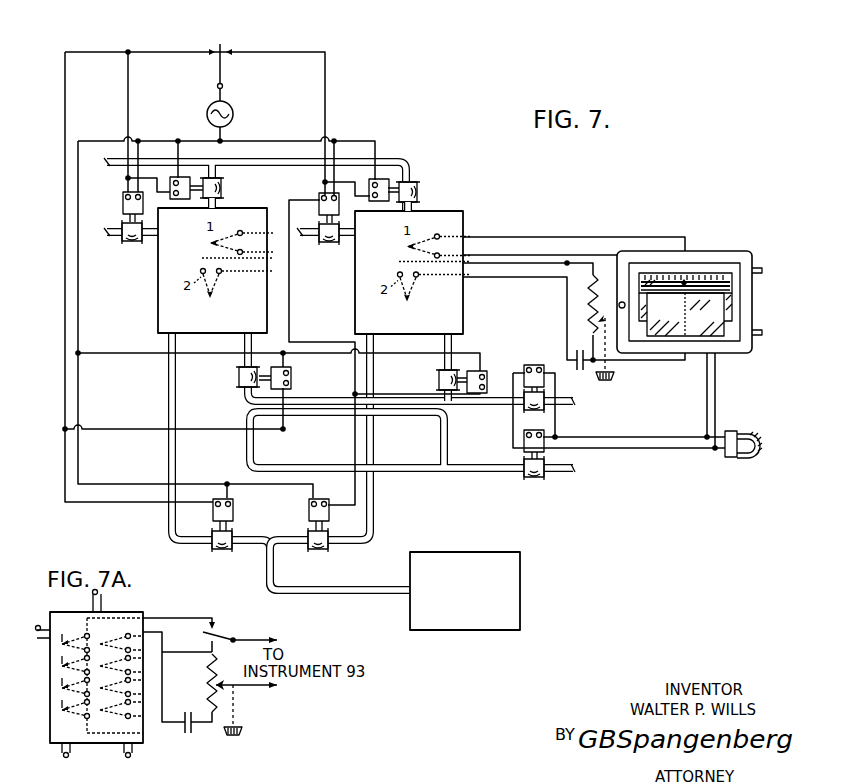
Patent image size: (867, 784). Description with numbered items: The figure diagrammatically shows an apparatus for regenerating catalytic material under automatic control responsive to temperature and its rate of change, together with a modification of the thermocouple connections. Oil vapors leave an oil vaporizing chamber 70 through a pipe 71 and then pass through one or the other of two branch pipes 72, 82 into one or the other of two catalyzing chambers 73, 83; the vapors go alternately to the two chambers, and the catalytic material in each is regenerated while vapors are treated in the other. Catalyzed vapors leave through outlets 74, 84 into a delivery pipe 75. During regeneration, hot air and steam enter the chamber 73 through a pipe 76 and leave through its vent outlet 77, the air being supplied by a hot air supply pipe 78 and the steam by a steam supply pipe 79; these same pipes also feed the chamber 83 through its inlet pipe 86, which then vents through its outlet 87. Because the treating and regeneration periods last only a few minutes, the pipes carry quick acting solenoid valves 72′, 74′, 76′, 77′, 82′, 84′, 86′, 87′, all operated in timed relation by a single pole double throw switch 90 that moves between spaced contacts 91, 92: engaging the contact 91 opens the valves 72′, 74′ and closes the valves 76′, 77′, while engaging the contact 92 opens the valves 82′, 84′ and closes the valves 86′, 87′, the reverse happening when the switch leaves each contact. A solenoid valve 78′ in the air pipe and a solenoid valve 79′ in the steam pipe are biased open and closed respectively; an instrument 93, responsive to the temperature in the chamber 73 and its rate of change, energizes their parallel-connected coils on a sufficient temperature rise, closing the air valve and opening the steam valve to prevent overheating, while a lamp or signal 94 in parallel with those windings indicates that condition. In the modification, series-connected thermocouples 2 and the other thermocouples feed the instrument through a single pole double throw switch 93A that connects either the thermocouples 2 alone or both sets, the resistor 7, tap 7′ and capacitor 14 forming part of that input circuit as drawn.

In FIG. 7, the resistor / potentiometer 7 is at (592, 315).
In FIG. 7A, the resistor / potentiometer 7 is at (206, 679).
In FIG. 7, the potentiometer tap 7′ is at (601, 321).
In FIG. 7A, the potentiometer tap 7′ is at (219, 687).
In FIG. 7, the capacitor 14 is at (577, 371).
In FIG. 7A, the capacitor 14 is at (186, 734).
In FIG. 7, the oil vaporizing chamber 70 is at (465, 591).
In FIG. 7, the pipe 71 is at (352, 594).
In FIG. 7, the branch pipe 72 is at (377, 524).
In FIG. 7A, the branch pipe 72 is at (72, 752).
In FIG. 7, the solenoid valve 72′ is at (320, 552).
In FIG. 7, the catalyzing chamber 73 is at (464, 300).
In FIG. 7A, the catalyzing chamber 73 is at (85, 677).
In FIG. 7, the outlet 74 is at (462, 199).
In FIG. 7A, the outlet 74 is at (103, 600).
In FIG. 7, the solenoid valve 74′ is at (462, 176).
In FIG. 7, the delivery pipe 75 is at (390, 162).
In FIG. 7, the pipe 76 is at (453, 348).
In FIG. 7A, the pipe 76 is at (132, 753).
In FIG. 7, the solenoid valve 76′ is at (439, 378).
In FIG. 7, the vent outlet 77 is at (355, 262).
In FIG. 7, the solenoid valve 77′ is at (334, 254).
In FIG. 7A, the solenoid valve 77′ is at (44, 638).
In FIG. 7, the hot air supply pipe 78 is at (504, 480).
In FIG. 7, the solenoid valve 78′ is at (538, 478).
In FIG. 7, the steam supply pipe 79 is at (498, 402).
In FIG. 7, the solenoid valve 79′ is at (548, 352).
In FIG. 7, the branch pipe 82 is at (167, 522).
In FIG. 7, the solenoid valve 82′ is at (222, 551).
In FIG. 7, the catalyzing chamber 83 is at (163, 284).
In FIG. 7, the outlet 84 is at (216, 205).
In FIG. 7, the solenoid valve 84′ is at (222, 188).
In FIG. 7, the inlet pipe 86 is at (246, 344).
In FIG. 7, the solenoid valve 86′ is at (240, 377).
In FIG. 7, the outlet 87 is at (154, 246).
In FIG. 7, the solenoid valve 87′ is at (123, 224).
In FIG. 7, the single pole double throw switch 90 is at (224, 84).
In FIG. 7, the contact 91 is at (227, 52).
In FIG. 7, the contact 92 is at (209, 52).
In FIG. 7, the instrument 93 is at (705, 251).
In FIG. 7A, the single pole double throw switch 93A is at (217, 630).
In FIG. 7, the lamp or signal 94 is at (743, 431).
In FIG. 7A, the thermocouples 2 is at (99, 685).